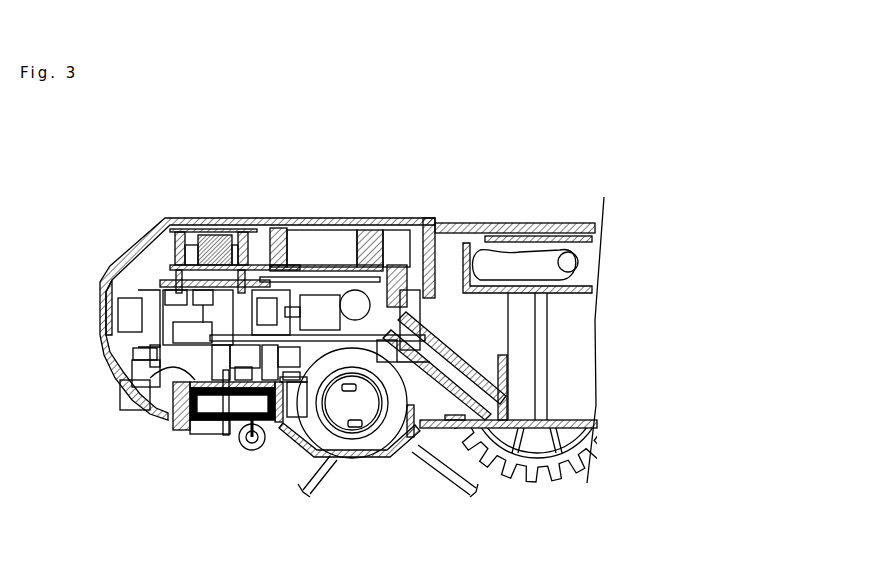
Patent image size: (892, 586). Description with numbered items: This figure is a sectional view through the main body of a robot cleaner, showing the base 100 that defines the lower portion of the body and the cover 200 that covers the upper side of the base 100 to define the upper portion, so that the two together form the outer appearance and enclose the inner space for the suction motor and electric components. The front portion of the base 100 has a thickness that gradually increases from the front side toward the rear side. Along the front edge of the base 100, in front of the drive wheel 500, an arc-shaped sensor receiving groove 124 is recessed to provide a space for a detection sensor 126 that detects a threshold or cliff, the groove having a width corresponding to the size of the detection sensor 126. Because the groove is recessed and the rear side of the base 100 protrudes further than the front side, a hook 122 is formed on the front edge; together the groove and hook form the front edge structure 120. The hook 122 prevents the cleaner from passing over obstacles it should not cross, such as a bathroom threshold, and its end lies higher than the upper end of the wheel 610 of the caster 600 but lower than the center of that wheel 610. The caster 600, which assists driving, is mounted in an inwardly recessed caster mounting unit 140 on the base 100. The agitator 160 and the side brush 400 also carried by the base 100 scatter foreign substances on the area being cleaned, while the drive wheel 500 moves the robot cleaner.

The base 100 is at (103, 360).
The first driving unit 120 is at (197, 443).
The hook 122 is at (168, 432).
The sensor receiving groove 124 is at (143, 413).
The detection sensor 126 is at (147, 370).
The caster mounting unit 140 is at (118, 392).
The agitator 160 is at (370, 430).
The cover 200 is at (437, 225).
The side brush 400 is at (320, 477).
The drive wheel 500 is at (537, 456).
The caster 600 is at (238, 448).
The wheel 610 is at (252, 442).